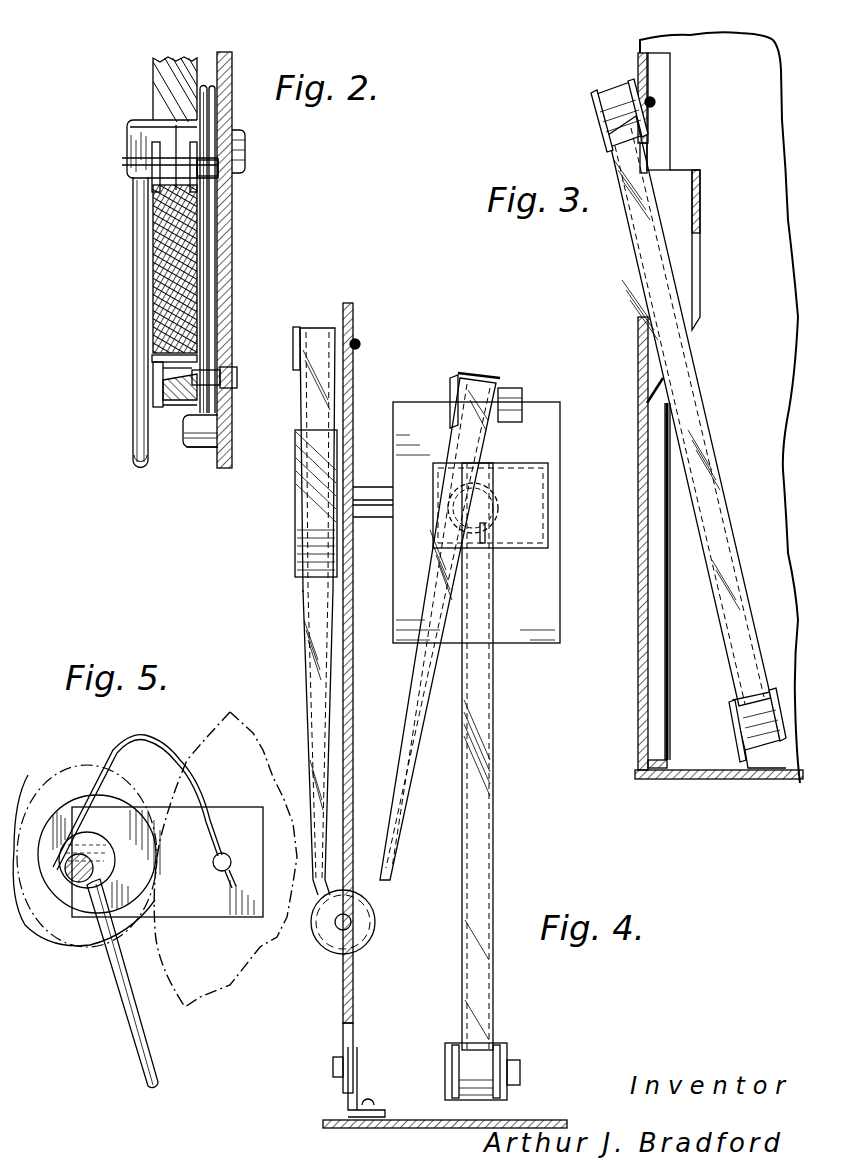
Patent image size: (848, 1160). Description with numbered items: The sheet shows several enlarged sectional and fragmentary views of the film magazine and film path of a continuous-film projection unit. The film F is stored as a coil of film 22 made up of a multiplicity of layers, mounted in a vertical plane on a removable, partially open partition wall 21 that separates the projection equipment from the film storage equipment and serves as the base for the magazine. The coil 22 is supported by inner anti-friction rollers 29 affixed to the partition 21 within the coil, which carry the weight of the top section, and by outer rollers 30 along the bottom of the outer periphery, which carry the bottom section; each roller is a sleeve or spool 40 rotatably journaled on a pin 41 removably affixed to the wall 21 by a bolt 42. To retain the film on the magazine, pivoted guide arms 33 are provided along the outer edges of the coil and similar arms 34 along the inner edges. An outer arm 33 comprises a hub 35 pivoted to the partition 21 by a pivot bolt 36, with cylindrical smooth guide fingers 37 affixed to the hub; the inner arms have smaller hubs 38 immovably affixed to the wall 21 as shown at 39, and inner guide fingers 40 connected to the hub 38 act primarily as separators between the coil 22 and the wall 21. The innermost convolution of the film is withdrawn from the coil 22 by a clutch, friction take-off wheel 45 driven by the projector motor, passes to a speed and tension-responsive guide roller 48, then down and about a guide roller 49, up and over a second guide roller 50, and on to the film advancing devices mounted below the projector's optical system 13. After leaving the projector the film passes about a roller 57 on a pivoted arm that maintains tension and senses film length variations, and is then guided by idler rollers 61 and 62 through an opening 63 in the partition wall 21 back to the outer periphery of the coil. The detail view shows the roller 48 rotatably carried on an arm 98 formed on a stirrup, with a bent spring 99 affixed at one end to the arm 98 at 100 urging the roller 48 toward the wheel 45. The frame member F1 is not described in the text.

In FIG. 4, the optical system 13 is at (538, 405).
In FIG. 2, the partition wall 21 is at (232, 247).
In FIG. 4, the partition wall 21 is at (355, 322).
In FIG. 3, the partition wall 21 is at (640, 510).
In FIG. 2, the coil of film 22 is at (155, 293).
In FIG. 2, the anti-friction rollers 29 is at (155, 161).
In FIG. 4, the anti-friction rollers 29 is at (297, 335).
In FIG. 2, the rollers 30 is at (160, 388).
In FIG. 2, the guide arms 33 is at (131, 205).
In FIG. 2, the arms 34 is at (212, 72).
In FIG. 2, the hub 35 is at (130, 128).
In FIG. 2, the pivot bolt 36 is at (246, 148).
In FIG. 2, the guide fingers 37 is at (136, 452).
In FIG. 2, the hub 38 is at (203, 448).
In FIG. 2, the affixing of inner hub to wall 39 is at (222, 432).
In FIG. 2, the inner guide fingers / sleeve or spool 40 is at (212, 88).
In FIG. 2, the pin 41 is at (181, 384).
In FIG. 2, the bolt 42 is at (225, 170).
In FIG. 4, the take-off wheel 45 is at (297, 550).
In FIG. 5, the take-off wheel 45 is at (212, 725).
In FIG. 4, the guide roller 48 is at (297, 497).
In FIG. 5, the guide roller 48 is at (40, 803).
In FIG. 4, the guide roller 49 is at (326, 940).
In FIG. 4, the second guide roller 50 is at (455, 378).
In FIG. 4, the roller 57 is at (510, 1062).
In FIG. 3, the idler roller 61 is at (768, 702).
In FIG. 3, the idler roller 62 is at (606, 121).
In FIG. 3, the opening 63 is at (640, 296).
In FIG. 5, the arm 98 is at (192, 918).
In FIG. 5, the bent spring 99 is at (152, 740).
In FIG. 5, the spring attachment point 100 is at (232, 860).
In FIG. 4, the frame member F' F1 is at (493, 742).
In FIG. 3, the frame member F' F1 is at (705, 442).